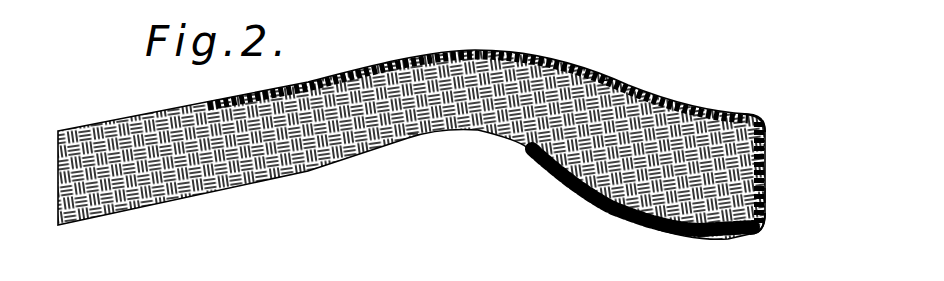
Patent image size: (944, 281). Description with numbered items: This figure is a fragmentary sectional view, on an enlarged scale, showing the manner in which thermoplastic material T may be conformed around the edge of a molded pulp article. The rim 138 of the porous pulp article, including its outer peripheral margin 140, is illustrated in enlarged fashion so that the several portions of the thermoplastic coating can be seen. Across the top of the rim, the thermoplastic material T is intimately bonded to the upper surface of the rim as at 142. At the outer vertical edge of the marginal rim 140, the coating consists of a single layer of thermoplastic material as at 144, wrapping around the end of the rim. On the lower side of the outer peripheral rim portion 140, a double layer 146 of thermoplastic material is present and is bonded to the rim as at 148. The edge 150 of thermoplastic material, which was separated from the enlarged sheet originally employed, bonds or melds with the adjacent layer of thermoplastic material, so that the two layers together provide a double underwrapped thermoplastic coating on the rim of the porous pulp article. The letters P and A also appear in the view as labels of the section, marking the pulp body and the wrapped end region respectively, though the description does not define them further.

The rim 138 is at (267, 144).
The outer peripheral margin 140 is at (757, 117).
The upper surface bond 142 is at (471, 43).
The single layer of thermoplastic material 144 is at (757, 152).
The double layer of thermoplastic material 146 is at (603, 212).
The lower side bond 148 is at (571, 189).
The edge of thermoplastic material 150 is at (745, 227).
The thermoplastic material T is at (596, 73).
The bottom surface P is at (406, 126).
The end area A is at (762, 192).